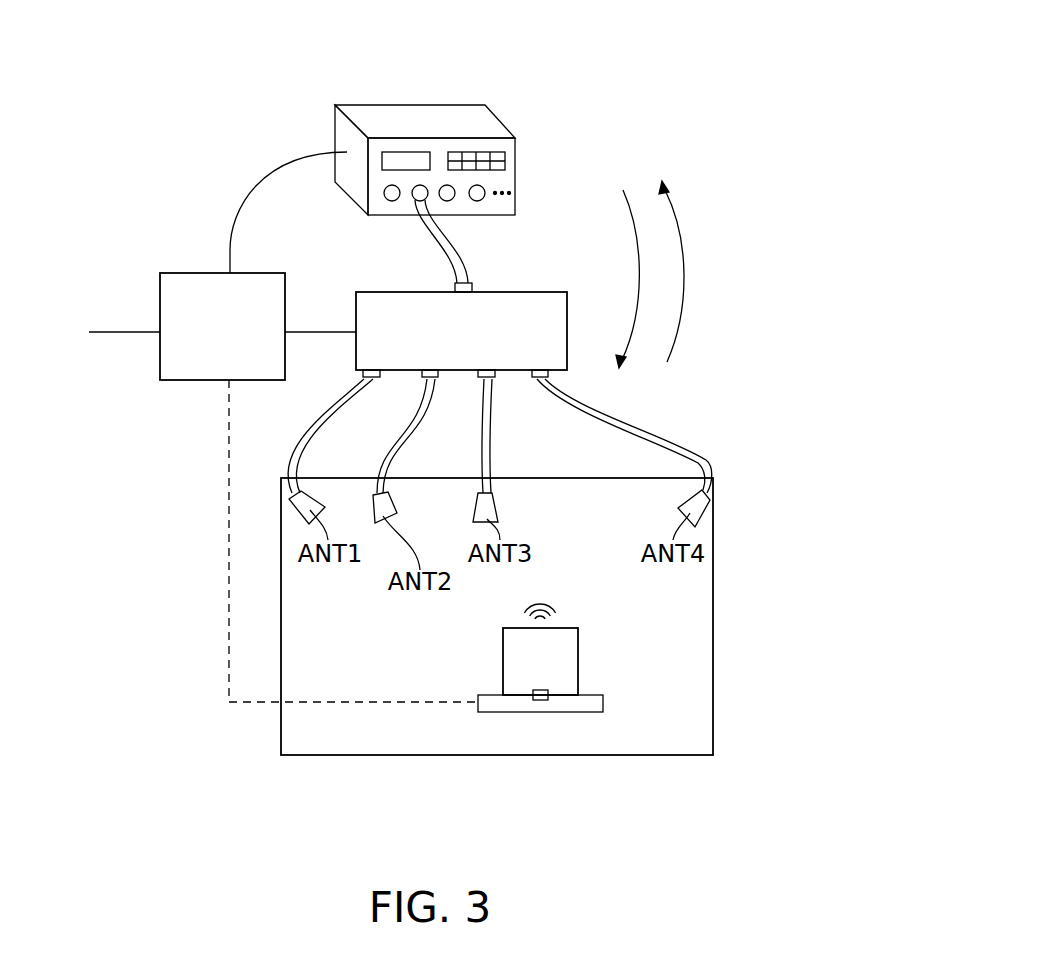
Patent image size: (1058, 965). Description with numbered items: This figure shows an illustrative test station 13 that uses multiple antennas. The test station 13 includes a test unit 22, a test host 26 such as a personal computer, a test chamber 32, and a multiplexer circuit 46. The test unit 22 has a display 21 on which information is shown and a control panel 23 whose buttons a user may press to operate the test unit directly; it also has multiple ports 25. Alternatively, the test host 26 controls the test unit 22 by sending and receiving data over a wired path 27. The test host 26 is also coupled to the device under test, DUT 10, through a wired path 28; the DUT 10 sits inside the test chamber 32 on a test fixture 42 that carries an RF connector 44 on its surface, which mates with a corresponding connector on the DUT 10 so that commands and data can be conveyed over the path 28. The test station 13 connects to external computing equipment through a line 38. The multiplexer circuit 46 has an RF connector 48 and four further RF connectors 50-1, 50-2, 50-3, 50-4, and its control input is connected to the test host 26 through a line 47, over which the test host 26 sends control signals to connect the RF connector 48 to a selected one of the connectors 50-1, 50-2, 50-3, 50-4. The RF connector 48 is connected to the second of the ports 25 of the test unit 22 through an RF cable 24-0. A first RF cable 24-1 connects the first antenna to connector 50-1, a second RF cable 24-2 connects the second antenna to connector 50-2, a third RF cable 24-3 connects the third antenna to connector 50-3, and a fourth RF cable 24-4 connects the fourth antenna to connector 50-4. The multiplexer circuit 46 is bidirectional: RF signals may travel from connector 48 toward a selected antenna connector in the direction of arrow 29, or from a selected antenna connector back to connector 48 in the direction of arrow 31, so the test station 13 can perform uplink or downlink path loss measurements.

The test station 13 is at (658, 44).
The test unit 22 is at (482, 84).
The display 21 is at (393, 152).
The control panel 23 is at (505, 157).
The ports 25 is at (385, 194).
The wired path 27 is at (262, 188).
The test host 26 is at (177, 273).
The line 38 is at (132, 333).
The line 47 is at (327, 334).
The wired path 28 is at (263, 705).
The multiplexer circuit 46 is at (358, 307).
The RF connector 48 is at (474, 288).
The RF cable 24-0 is at (435, 233).
The arrow 29 is at (637, 273).
The arrow 31 is at (682, 290).
The RF connector 50-1 is at (381, 375).
The RF connector 50-2 is at (442, 376).
The RF connector 50-3 is at (497, 374).
The RF connector 50-4 is at (548, 376).
The first RF cable 24-1 is at (287, 453).
The second RF cable 24-2 is at (400, 438).
The third RF cable 24-3 is at (490, 468).
The fourth RF cable 24-4 is at (697, 448).
The test chamber 32 is at (647, 745).
The DUT 10 is at (570, 628).
The test fixture 42 is at (603, 703).
The RF connector 44 is at (542, 700).